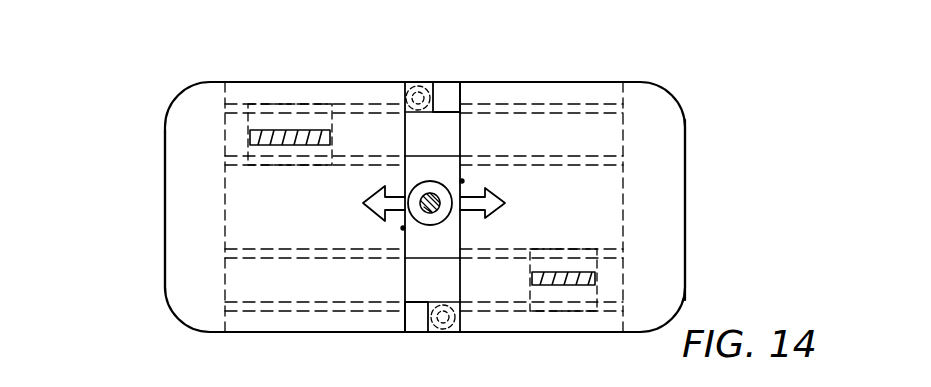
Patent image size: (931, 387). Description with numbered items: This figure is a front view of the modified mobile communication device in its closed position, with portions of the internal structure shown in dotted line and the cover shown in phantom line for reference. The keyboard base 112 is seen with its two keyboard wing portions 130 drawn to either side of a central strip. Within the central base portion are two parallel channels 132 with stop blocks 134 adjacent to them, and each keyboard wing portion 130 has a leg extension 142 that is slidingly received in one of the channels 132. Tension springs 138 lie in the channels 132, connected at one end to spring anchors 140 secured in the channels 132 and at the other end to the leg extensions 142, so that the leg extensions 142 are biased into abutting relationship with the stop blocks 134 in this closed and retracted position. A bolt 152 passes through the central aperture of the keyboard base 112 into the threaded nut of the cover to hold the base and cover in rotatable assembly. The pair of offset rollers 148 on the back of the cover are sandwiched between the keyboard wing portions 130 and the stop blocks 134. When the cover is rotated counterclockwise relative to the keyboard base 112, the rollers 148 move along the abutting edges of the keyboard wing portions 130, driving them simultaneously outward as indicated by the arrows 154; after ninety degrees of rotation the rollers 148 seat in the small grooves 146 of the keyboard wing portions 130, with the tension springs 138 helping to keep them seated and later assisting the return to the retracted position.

The keyboard base 112 is at (672, 127).
The keyboard wing portions 130 is at (185, 236).
The channels 132 is at (515, 105).
The stop blocks 134 is at (447, 93).
The tension springs 138 is at (295, 122).
The spring anchors 140 is at (232, 128).
The leg extensions 142 is at (593, 130).
The grooves 146 is at (464, 181).
The rollers 148 is at (413, 84).
The bolt 152 is at (436, 212).
The arrows 154 is at (380, 194).